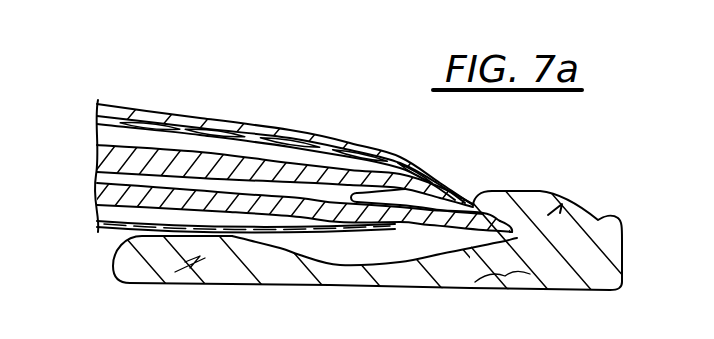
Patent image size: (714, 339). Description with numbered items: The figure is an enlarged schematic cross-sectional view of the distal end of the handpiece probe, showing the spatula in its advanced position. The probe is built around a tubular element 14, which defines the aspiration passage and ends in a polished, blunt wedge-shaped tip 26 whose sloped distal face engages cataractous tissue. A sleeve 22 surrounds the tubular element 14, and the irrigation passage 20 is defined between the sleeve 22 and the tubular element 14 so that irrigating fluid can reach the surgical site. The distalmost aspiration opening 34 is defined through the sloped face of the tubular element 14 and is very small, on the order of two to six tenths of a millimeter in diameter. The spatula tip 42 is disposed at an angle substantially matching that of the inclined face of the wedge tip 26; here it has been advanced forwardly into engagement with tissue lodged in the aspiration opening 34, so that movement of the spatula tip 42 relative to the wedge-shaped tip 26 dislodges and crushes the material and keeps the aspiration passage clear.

The tubular element 14 is at (172, 238).
The irrigation passage 20 is at (141, 138).
The sleeve 22 is at (252, 127).
The wedge-shaped tip 26 is at (414, 235).
The aspiration opening 34 is at (470, 203).
The spatula tip 42 is at (375, 151).